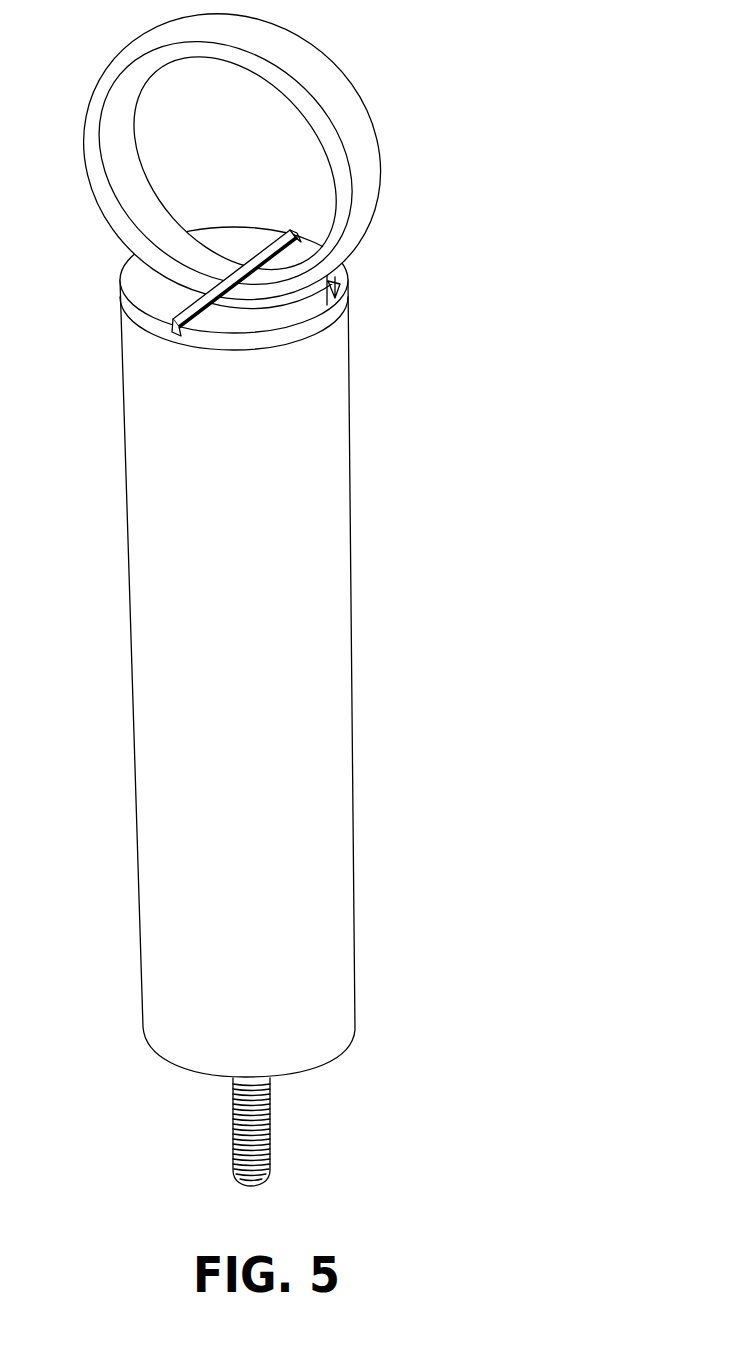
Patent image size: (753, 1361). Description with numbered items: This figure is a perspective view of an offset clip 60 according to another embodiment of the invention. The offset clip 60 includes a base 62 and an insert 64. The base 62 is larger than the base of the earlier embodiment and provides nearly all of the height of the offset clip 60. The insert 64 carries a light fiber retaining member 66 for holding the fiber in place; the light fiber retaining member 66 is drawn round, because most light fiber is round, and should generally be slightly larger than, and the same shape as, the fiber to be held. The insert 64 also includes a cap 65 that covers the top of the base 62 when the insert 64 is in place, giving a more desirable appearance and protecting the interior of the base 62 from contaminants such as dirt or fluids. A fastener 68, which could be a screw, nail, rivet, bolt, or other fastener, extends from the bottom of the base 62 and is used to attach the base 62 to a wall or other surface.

The offset clip 60 is at (313, 593).
The base 62 is at (325, 739).
The insert 64 is at (150, 297).
The cap 65 is at (234, 240).
The light fiber retaining member 66 is at (308, 83).
The fastener 68 is at (267, 1140).